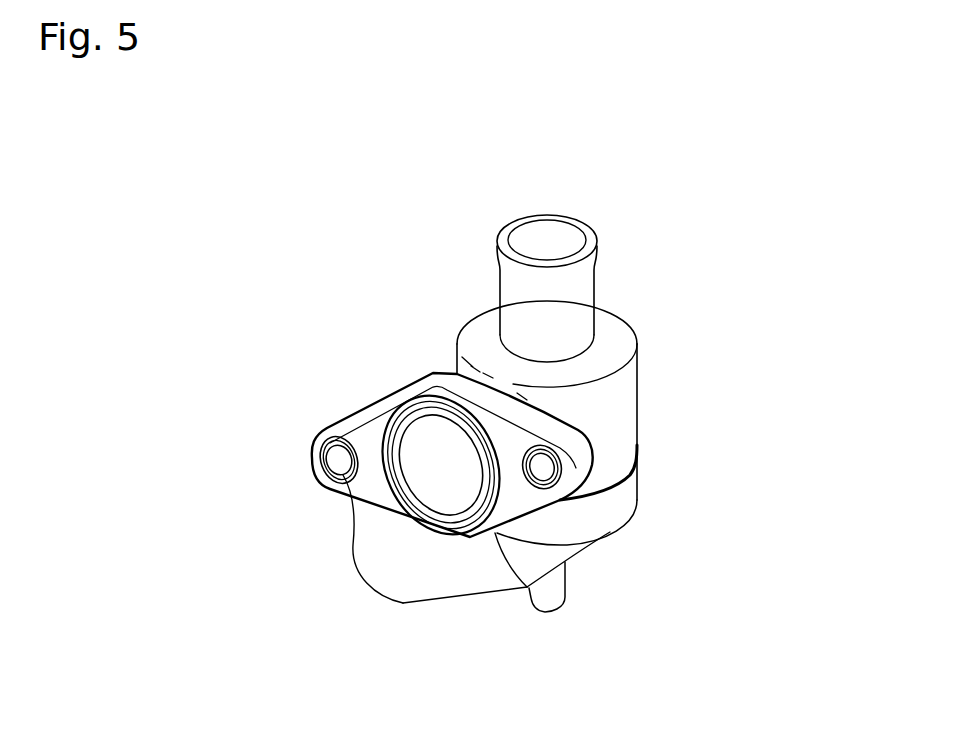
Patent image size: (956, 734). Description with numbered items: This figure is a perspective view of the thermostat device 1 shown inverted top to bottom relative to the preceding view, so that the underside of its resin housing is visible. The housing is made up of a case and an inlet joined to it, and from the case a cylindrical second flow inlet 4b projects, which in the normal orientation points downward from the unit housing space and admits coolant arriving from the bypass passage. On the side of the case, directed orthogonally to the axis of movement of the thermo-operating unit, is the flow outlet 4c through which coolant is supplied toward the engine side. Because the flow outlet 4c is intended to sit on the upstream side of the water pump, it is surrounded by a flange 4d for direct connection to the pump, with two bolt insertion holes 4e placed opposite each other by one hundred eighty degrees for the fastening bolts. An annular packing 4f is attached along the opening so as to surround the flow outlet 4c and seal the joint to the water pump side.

The thermostat device 1 is at (676, 238).
The second flow inlet 4b is at (553, 232).
The flow outlet 4c is at (351, 557).
The flange 4d is at (423, 468).
The bolt insertion holes 4e is at (338, 460).
The packing 4f is at (423, 505).